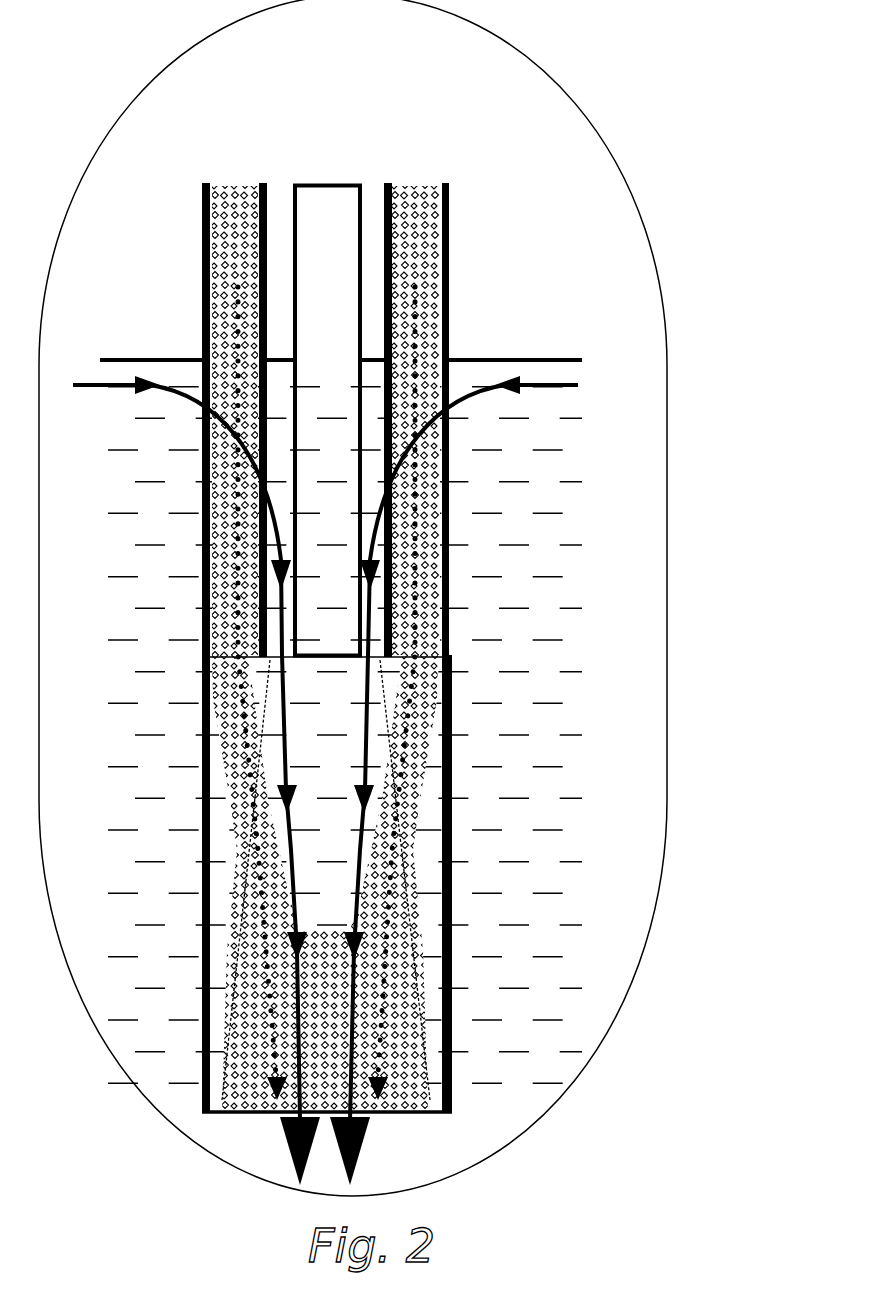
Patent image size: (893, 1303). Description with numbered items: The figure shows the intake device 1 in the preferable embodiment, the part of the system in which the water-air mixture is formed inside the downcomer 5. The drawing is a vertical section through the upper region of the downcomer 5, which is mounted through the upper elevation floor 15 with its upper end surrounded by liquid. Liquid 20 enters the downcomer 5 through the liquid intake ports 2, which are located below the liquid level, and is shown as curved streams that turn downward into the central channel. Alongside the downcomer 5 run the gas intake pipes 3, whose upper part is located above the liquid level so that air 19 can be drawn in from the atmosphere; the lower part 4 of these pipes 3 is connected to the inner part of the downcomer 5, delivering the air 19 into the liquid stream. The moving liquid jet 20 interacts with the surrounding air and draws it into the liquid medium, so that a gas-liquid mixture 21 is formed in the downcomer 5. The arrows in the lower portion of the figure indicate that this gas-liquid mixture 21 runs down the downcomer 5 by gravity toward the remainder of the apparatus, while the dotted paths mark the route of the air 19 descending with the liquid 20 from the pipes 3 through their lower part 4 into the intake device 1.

The intake device 1 is at (651, 242).
The liquid intake ports 2 is at (327, 525).
The gas intake ports 3 is at (409, 233).
The lower part of gas intake pipes 4 is at (425, 647).
The downcomer 5 is at (453, 827).
The upper elevation floor 15 is at (148, 360).
The gas (air) 19 is at (231, 352).
The liquid 20 is at (287, 724).
The gas-liquid mixture 21 is at (290, 1033).